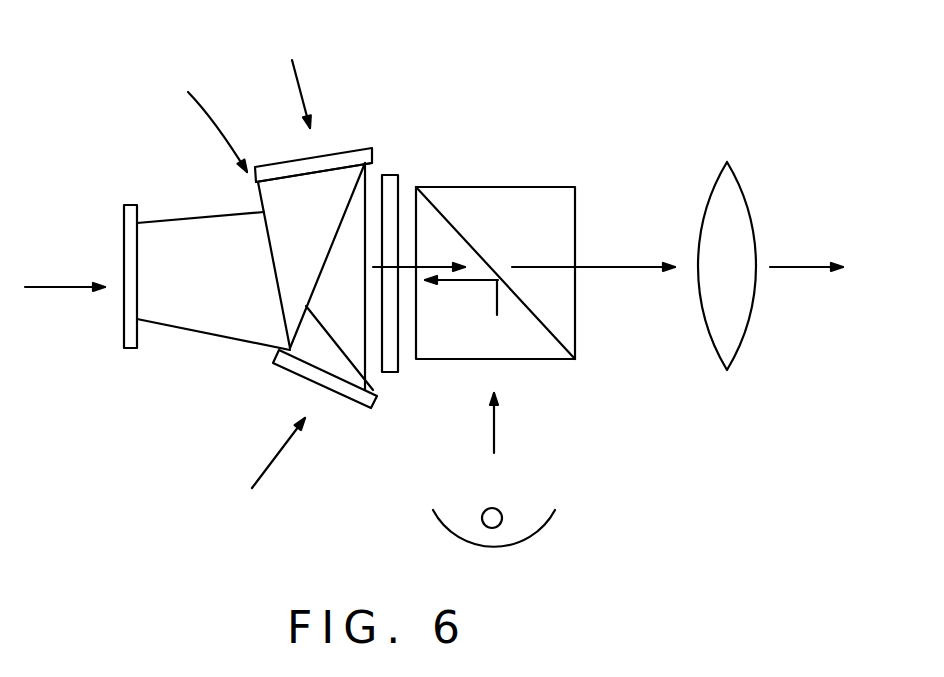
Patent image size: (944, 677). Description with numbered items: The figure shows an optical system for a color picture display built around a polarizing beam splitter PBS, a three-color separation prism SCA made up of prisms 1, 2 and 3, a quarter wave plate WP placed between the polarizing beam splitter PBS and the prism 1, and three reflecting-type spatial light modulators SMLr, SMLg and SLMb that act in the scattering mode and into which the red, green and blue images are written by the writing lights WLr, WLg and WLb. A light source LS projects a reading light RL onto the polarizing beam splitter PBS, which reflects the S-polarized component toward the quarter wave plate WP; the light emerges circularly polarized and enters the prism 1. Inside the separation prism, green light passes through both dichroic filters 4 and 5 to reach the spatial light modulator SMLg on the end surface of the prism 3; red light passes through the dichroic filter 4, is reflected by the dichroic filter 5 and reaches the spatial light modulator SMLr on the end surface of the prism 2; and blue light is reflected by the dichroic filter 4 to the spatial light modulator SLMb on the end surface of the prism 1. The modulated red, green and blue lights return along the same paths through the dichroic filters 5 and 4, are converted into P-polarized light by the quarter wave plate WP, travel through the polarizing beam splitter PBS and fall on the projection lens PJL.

The prism 1 is at (355, 335).
The prism 2 is at (280, 195).
The prism 3 is at (183, 235).
The dichroic filter 4 is at (373, 390).
The dichroic filter 5 is at (283, 297).
The spatial light modulator SMLg is at (133, 218).
The spatial light modulator SMLr is at (347, 157).
The spatial light modulator SLMb is at (287, 362).
The three-color separation prism SCA is at (198, 114).
The writing light WLg is at (55, 273).
The writing light WLr is at (289, 76).
The writing light WLb is at (261, 477).
The quarter wave plate WP is at (392, 175).
The polarizing beam splitter PBS is at (522, 198).
The reading light RL is at (497, 442).
The light source LS is at (502, 512).
The projection lens PJL is at (740, 205).